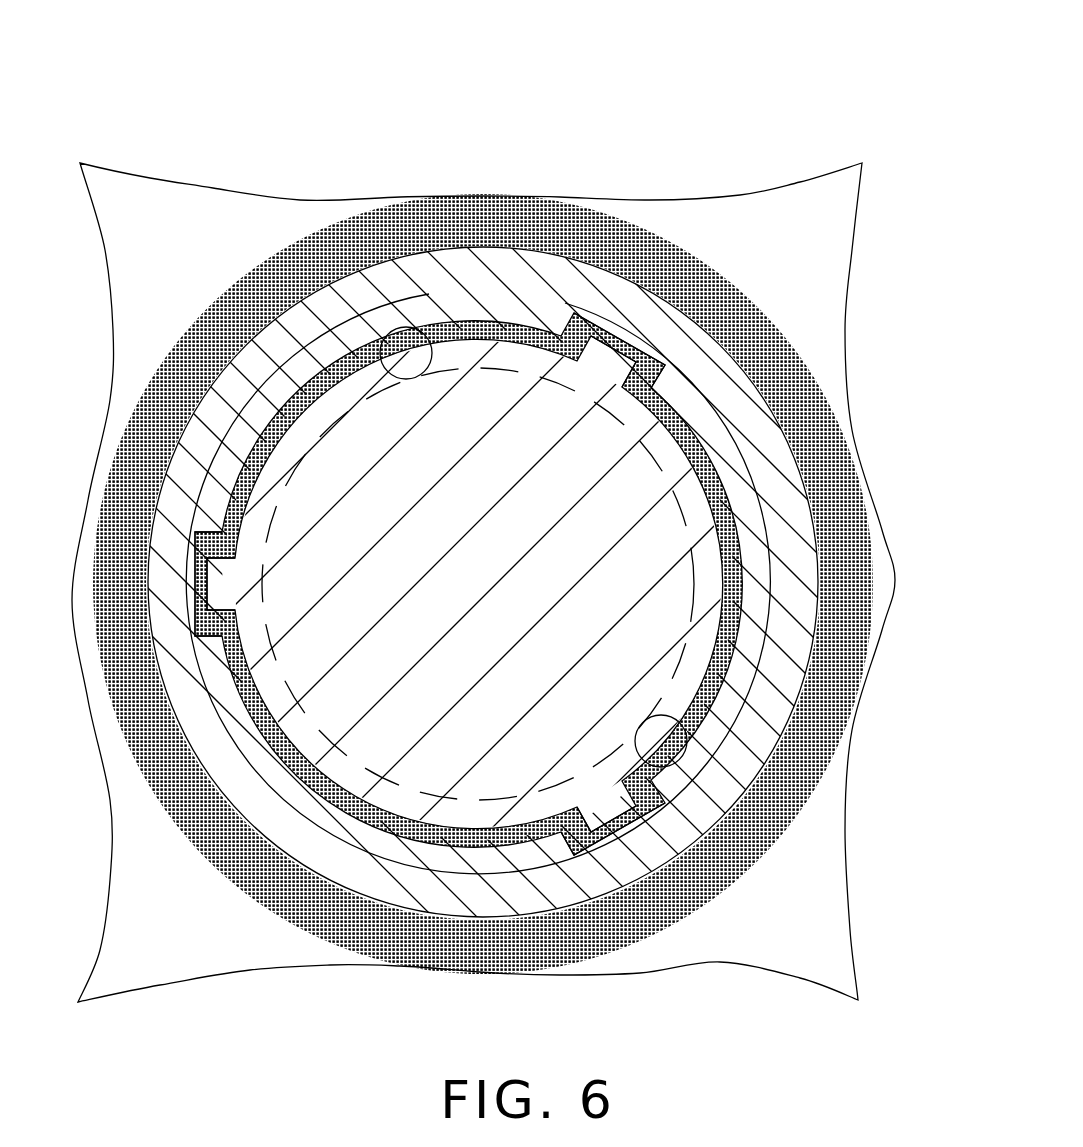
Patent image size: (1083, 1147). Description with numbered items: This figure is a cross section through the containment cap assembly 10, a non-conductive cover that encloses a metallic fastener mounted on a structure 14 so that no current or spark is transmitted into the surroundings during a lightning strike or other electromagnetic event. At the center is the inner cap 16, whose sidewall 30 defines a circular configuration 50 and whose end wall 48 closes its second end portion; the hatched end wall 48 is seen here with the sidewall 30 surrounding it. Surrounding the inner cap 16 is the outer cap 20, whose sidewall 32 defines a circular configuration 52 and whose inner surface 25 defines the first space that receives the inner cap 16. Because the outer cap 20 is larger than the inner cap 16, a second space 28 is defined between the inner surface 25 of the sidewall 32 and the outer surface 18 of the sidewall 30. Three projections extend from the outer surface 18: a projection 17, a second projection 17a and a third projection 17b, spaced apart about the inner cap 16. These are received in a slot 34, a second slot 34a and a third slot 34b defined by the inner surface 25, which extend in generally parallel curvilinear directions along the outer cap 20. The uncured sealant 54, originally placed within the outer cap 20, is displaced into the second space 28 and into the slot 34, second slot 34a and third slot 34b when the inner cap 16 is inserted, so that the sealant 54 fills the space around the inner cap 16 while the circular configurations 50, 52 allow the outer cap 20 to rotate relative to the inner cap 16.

The containment cap assembly 10 is at (716, 58).
The structure 14 is at (785, 210).
The inner cap 16 is at (215, 770).
The projection 17 is at (225, 578).
The second projection 17a is at (660, 830).
The third projection 17b is at (612, 355).
The outer surface 18 is at (268, 835).
The outer cap 20 is at (158, 713).
The inner surface 25 is at (405, 330).
The second space 28 is at (235, 478).
The sidewall 30 is at (660, 452).
The sidewall 32 is at (473, 272).
The slot 34 is at (210, 538).
The second slot 34a is at (590, 855).
The third slot 34b is at (665, 350).
The end wall 48 is at (475, 632).
The circular configuration 50 is at (693, 505).
The circular configuration 52 is at (300, 345).
The uncured sealant 54 is at (521, 322).